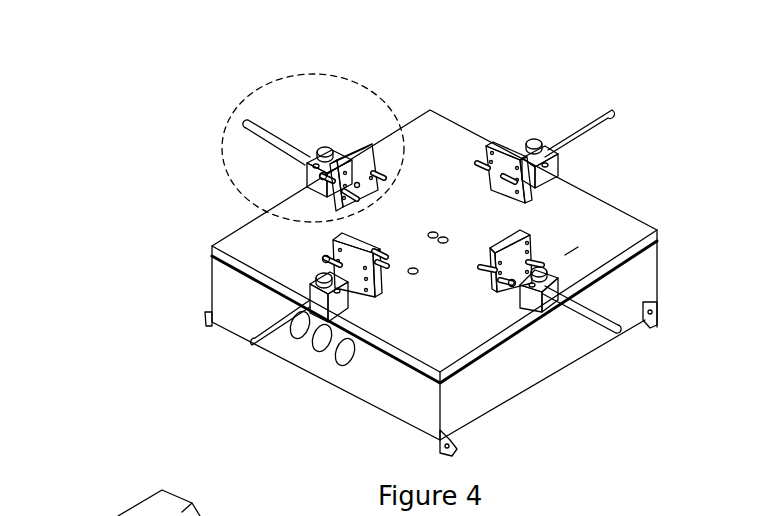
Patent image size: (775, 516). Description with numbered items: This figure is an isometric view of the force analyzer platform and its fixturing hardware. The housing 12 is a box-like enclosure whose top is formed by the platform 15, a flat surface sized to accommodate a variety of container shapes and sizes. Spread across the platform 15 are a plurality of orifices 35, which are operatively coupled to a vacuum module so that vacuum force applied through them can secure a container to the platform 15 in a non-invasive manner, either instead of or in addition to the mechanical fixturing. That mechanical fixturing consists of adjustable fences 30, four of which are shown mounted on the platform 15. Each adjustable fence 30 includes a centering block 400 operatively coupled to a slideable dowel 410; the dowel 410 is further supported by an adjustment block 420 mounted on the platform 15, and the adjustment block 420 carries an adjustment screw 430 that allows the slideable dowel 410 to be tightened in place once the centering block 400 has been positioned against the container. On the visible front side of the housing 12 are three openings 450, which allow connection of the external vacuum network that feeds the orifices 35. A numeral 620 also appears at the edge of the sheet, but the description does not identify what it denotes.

The housing 12 is at (642, 283).
The platform 15 is at (600, 218).
The adjustable fences 30 is at (262, 84).
The orifices 35 is at (448, 256).
The centering block 400 is at (366, 167).
The slideable dowel 410 is at (252, 126).
The adjustment block 420 is at (303, 180).
The adjustment screw 430 is at (323, 147).
The openings 450 is at (343, 370).
The reference 620 is at (774, 485).